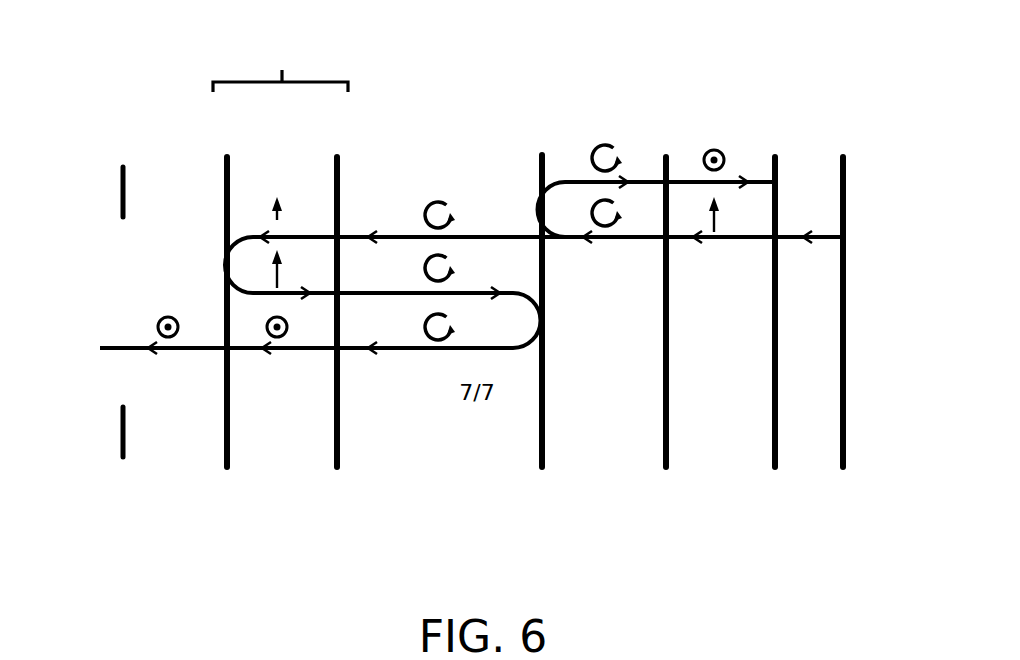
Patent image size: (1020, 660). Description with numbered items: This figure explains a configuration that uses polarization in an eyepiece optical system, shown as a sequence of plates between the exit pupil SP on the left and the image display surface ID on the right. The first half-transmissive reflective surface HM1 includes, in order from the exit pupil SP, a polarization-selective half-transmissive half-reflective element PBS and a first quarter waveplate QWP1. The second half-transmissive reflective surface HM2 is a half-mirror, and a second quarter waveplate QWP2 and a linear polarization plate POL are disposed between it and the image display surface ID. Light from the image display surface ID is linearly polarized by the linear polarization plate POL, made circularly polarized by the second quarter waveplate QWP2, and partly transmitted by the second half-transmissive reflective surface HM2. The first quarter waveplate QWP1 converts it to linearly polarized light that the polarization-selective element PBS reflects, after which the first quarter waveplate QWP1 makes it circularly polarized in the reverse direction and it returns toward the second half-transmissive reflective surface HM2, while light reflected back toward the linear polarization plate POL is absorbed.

The exit pupil SP is at (127, 281).
The first half-transmissive reflective surface HM1 is at (280, 58).
The polarization-selective half-transmissive half-reflective element PBS is at (223, 339).
The first quarter waveplate QWP1 is at (318, 485).
The second half-transmissive reflective surface HM2 is at (545, 339).
The second quarter waveplate QWP2 is at (675, 493).
The linear polarization plate POL is at (775, 490).
The image display surface ID is at (843, 285).